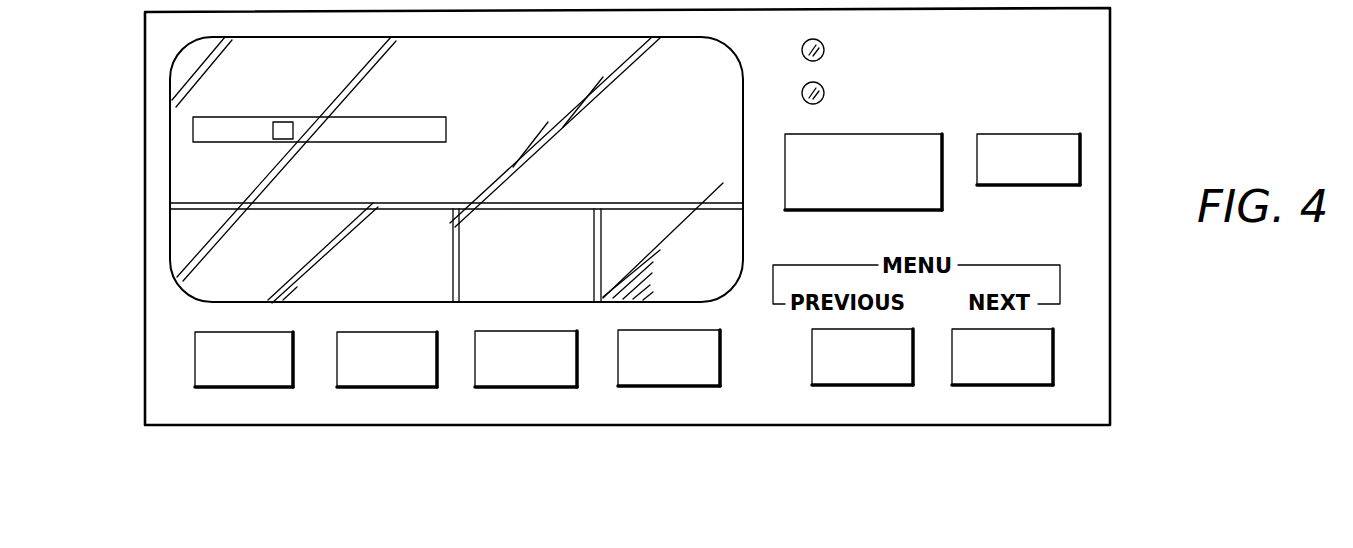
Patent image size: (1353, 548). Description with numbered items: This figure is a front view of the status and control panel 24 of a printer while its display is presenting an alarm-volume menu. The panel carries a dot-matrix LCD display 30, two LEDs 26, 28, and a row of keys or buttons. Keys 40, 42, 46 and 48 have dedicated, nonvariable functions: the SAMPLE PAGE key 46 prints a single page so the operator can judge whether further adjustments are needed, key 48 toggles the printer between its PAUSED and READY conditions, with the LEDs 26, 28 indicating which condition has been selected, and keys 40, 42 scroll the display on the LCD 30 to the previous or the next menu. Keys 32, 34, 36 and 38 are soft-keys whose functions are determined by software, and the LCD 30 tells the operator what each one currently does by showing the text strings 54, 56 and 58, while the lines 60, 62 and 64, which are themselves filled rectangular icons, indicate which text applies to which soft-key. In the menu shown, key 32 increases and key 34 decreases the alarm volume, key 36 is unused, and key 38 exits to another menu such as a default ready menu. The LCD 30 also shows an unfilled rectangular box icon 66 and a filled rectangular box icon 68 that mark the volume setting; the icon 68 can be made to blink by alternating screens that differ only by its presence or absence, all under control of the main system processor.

The status and control panel 24 is at (1110, 63).
The LED 26 is at (803, 47).
The LED 28 is at (803, 88).
The dot-matrix LCD display 30 is at (170, 165).
The soft-key 32 is at (268, 377).
The soft-key 34 is at (418, 377).
The soft-key 36 is at (560, 377).
The soft-key 38 is at (703, 377).
The key 40 is at (875, 375).
The key 42 is at (1017, 375).
The SAMPLE PAGE key 46 is at (1007, 175).
The key 48 is at (830, 190).
The text string 54 is at (377, 226).
The text string 56 is at (432, 268).
The text string 58 is at (668, 243).
The line 60 is at (338, 208).
The line 62 is at (460, 240).
The line 64 is at (604, 268).
The icon 66 is at (447, 128).
The icon 68 is at (293, 129).